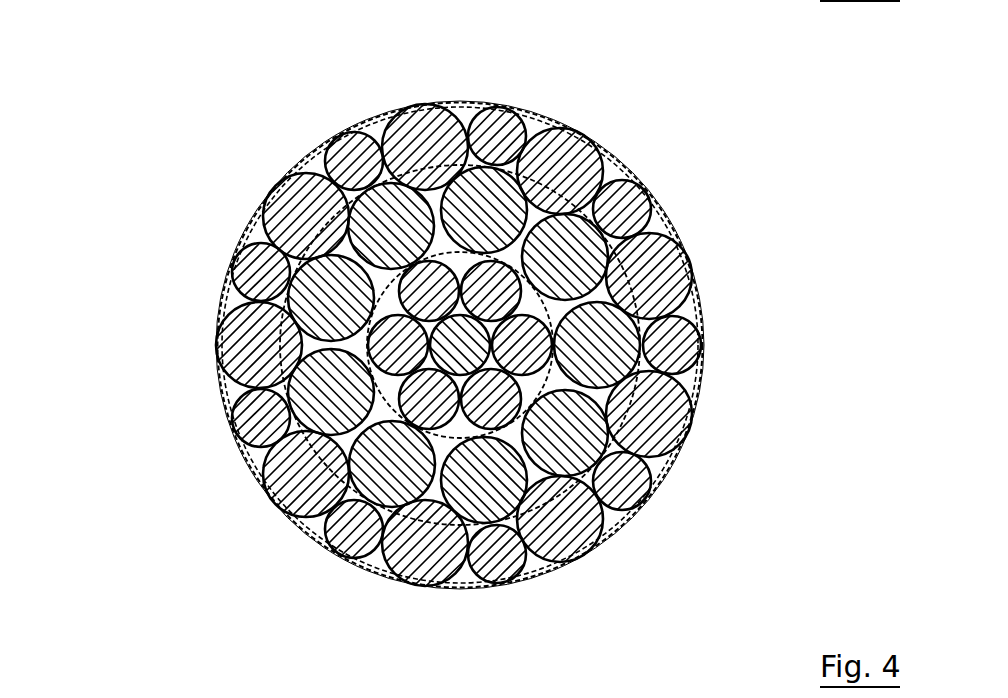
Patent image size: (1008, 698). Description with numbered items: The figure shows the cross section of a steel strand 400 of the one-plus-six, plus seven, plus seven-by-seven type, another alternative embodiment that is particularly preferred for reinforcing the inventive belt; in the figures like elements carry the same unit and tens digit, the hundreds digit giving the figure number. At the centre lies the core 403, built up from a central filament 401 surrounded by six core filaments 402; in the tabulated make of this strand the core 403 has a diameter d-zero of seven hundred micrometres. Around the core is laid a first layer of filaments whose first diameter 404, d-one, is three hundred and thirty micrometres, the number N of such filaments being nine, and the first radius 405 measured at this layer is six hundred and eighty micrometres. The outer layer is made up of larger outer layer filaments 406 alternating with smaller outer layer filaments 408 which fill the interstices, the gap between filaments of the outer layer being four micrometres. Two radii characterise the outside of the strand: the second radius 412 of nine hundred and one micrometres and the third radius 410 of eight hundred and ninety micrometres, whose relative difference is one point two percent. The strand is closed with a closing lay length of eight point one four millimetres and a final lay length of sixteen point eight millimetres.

The steel strand 400 is at (172, 120).
The central filament of the core 401 is at (614, 281).
The core filaments 402 is at (586, 341).
The core 403 is at (589, 353).
The first diameter 404 is at (540, 346).
The first radius 405 is at (408, 364).
The outer layer filaments 406 is at (392, 345).
The outer layer filaments 408 is at (397, 345).
The third radius 410 is at (441, 330).
The second radius 412 is at (460, 309).